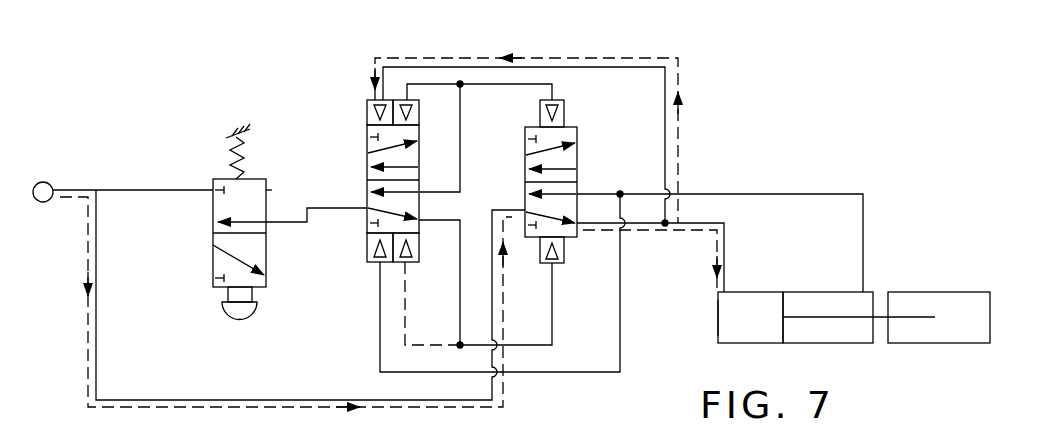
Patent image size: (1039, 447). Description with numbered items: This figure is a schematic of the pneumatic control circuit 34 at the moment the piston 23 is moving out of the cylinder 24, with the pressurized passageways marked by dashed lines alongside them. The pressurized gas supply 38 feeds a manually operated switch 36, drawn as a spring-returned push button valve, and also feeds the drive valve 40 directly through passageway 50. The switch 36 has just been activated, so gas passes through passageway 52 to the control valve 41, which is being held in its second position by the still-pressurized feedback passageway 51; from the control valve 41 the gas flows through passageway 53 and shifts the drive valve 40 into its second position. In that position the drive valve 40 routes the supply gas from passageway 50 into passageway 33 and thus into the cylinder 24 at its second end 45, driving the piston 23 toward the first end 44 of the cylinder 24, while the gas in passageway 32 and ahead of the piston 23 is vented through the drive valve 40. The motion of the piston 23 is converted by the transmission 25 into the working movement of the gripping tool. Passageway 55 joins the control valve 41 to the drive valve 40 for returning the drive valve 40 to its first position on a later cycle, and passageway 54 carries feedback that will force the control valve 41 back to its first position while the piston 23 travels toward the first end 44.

The pressurized gas supply 38 is at (45, 183).
The manually operated switch 36 is at (213, 182).
The control valve 41 is at (367, 130).
The drive valve 40 is at (577, 135).
The pneumatic control circuit 34 is at (372, 50).
The passageway 54 is at (588, 62).
The passageway 55 is at (493, 87).
The passageway 53 is at (463, 237).
The passageway 51 is at (552, 372).
The passageway 32 is at (757, 194).
The passageway 33 is at (726, 240).
The passageway 50 is at (256, 398).
The passageway 52 is at (323, 207).
The piston 23 is at (783, 300).
The cylinder 24 is at (812, 292).
The first end 44 is at (878, 297).
The transmission 25 is at (950, 292).
The second end 45 is at (718, 318).